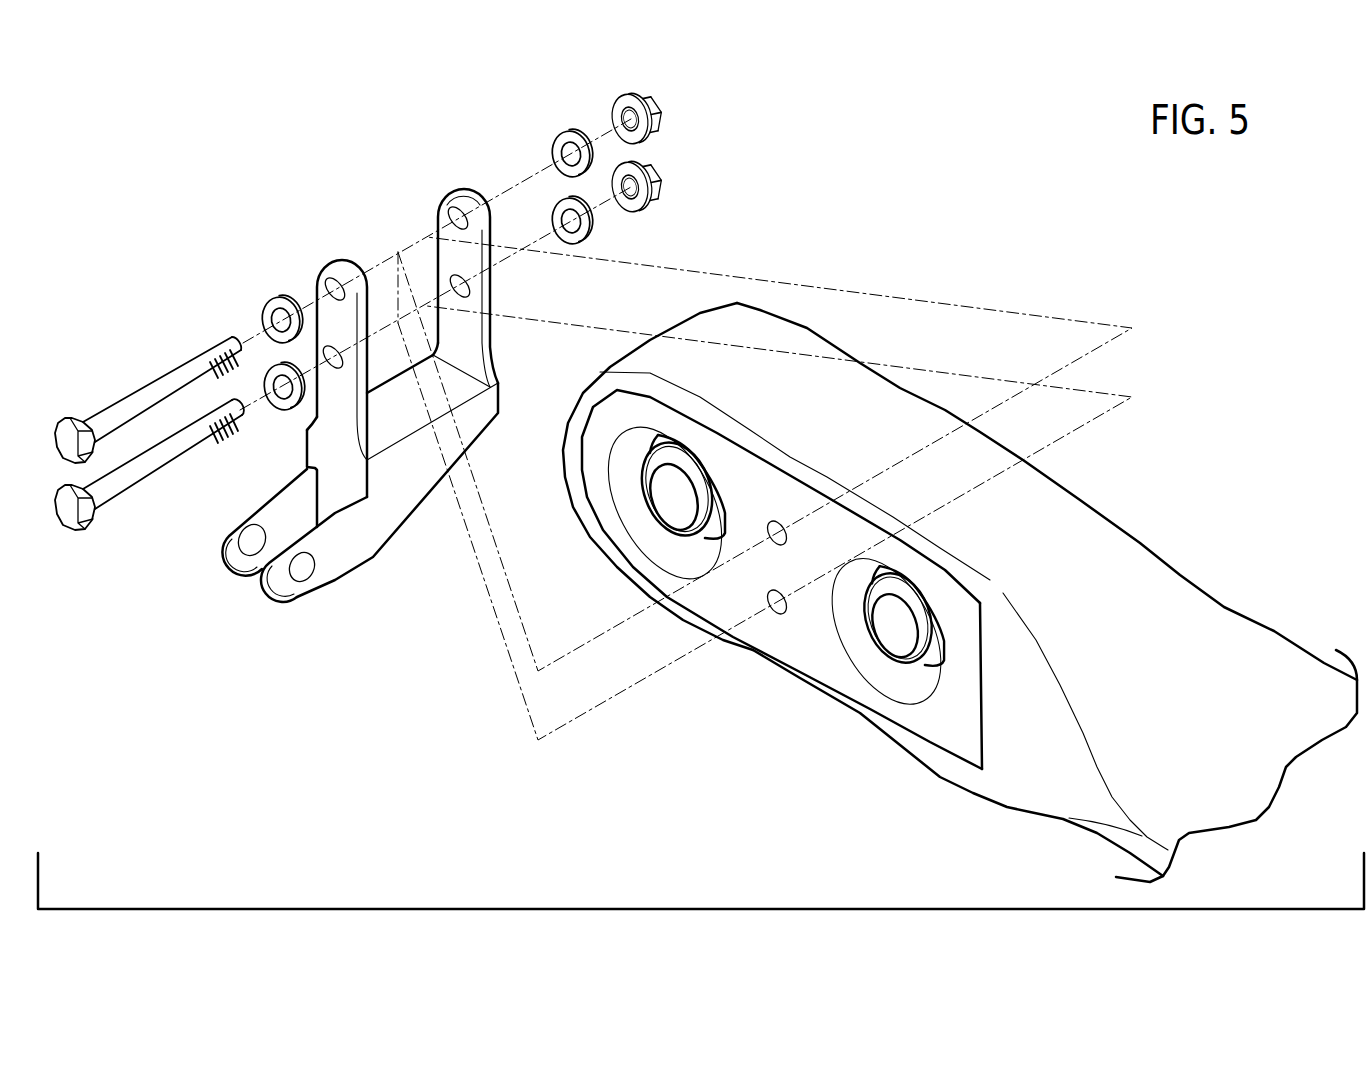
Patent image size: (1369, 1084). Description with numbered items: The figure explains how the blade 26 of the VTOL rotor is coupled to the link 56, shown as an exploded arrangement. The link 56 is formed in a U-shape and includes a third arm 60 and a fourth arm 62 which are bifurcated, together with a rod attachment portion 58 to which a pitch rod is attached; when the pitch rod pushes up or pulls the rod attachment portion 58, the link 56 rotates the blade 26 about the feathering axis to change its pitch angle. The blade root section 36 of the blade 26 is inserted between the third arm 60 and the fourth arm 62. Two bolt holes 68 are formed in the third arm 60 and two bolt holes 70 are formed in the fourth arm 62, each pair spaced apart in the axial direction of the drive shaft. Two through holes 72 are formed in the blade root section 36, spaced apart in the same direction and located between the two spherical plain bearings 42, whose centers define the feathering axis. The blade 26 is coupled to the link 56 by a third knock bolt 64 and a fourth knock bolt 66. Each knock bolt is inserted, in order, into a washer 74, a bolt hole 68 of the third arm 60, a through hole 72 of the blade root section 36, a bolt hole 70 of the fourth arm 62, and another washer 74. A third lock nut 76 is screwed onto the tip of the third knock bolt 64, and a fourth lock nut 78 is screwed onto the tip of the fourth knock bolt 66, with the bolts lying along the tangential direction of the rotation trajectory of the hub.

The blade 26 is at (1277, 629).
The blade root section 36 is at (867, 395).
The spherical plain bearing 42 is at (656, 517).
The link 56 is at (345, 588).
The rod attachment portion 58 is at (300, 592).
The third arm 60 is at (343, 261).
The fourth arm 62 is at (461, 190).
The third knock bolt 64 is at (75, 522).
The fourth knock bolt 66 is at (72, 416).
The bolt hole 68 is at (326, 355).
The bolt hole 70 is at (451, 286).
The through hole 72 is at (775, 547).
The washer 74 is at (266, 376).
The third lock nut 76 is at (661, 186).
The fourth lock nut 78 is at (661, 113).